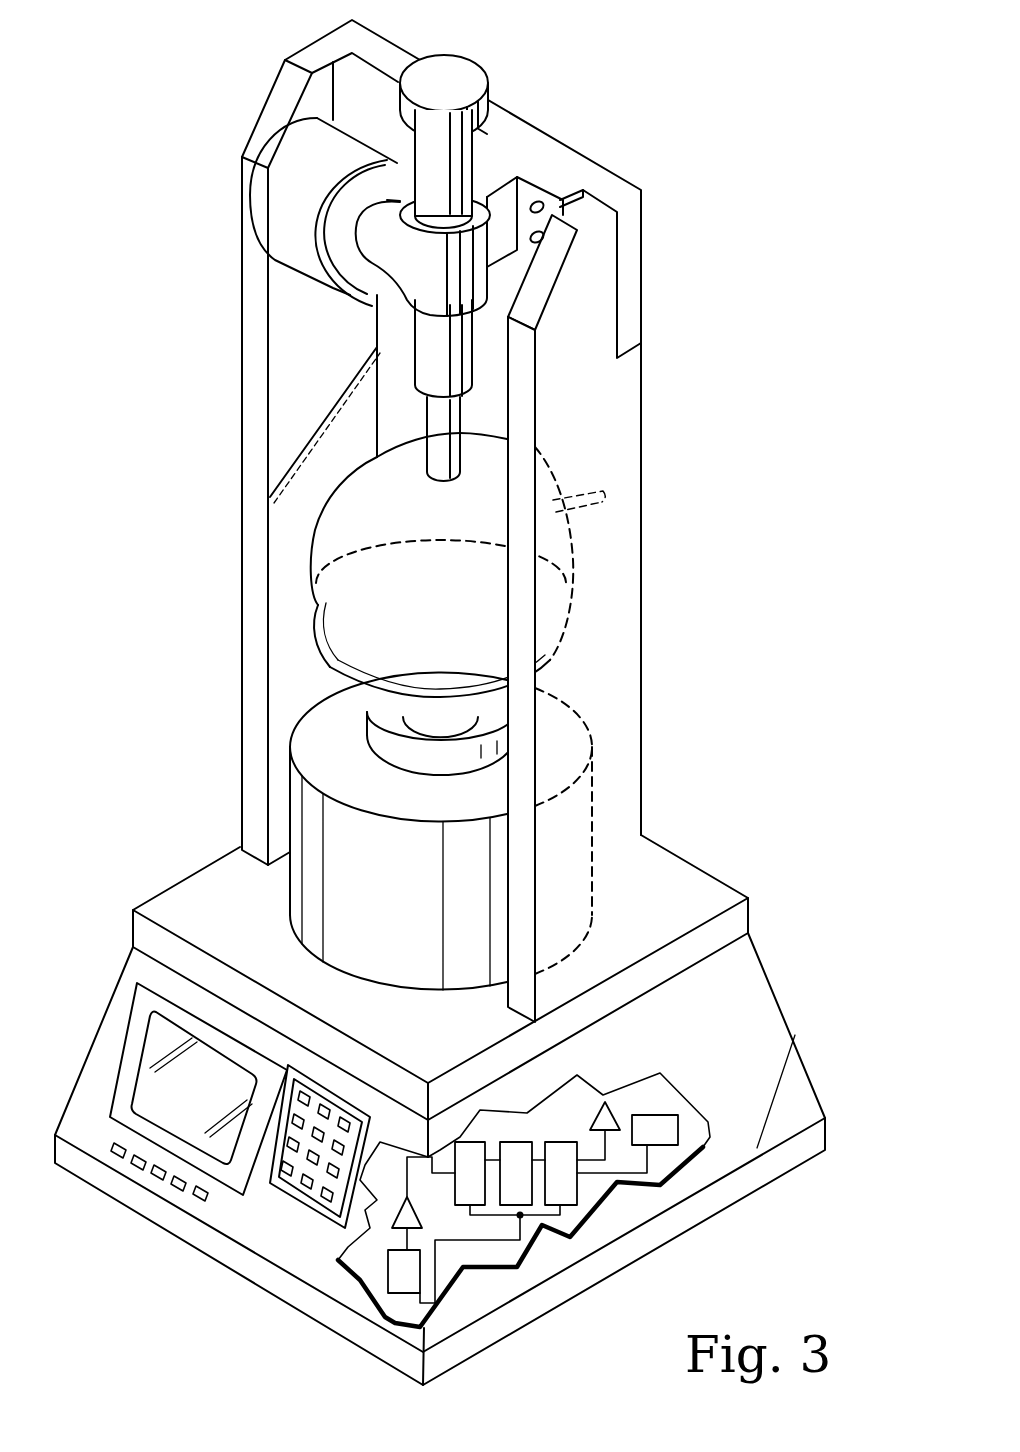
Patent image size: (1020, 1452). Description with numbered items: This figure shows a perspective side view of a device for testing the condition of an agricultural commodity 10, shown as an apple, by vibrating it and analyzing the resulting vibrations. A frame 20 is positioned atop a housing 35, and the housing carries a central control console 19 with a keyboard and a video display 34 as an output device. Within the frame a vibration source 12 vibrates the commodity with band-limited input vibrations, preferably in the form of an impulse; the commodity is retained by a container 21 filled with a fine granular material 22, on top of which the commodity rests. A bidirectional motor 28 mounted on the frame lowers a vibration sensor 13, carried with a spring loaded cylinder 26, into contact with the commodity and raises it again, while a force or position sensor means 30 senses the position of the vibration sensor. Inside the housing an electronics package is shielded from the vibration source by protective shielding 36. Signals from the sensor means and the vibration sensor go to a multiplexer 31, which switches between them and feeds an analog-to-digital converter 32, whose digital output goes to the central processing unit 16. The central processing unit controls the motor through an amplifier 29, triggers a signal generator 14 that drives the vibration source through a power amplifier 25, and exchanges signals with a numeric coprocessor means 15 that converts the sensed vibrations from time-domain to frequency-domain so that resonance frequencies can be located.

The agricultural commodity 10 is at (400, 565).
The vibration source 12 is at (278, 929).
The vibration sensor 13 is at (428, 470).
The signal generator 14 is at (417, 1250).
The numeric coprocessor means 15 is at (643, 1141).
The central processing unit 16 is at (580, 1190).
The central control console 19 is at (293, 1205).
The frame 20 is at (643, 477).
The container 21 is at (327, 669).
The fine granular material 22 is at (320, 606).
The power amplifier 25 is at (400, 1207).
The spring loaded cylinder 26 is at (475, 377).
The bidirectional motor 28 is at (284, 200).
The amplifier 29 is at (592, 1129).
The sensor means 30 is at (476, 250).
The multiplexer 31 is at (455, 1198).
The analog-to-digital converter 32 is at (527, 1142).
The video display 34 is at (172, 1099).
The housing 35 is at (141, 1219).
The protective shielding 36 is at (133, 928).